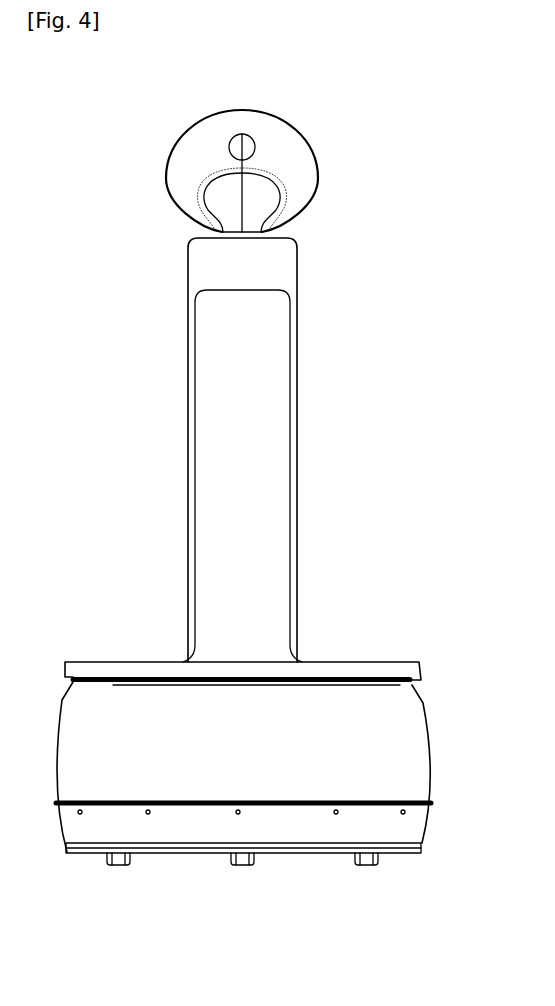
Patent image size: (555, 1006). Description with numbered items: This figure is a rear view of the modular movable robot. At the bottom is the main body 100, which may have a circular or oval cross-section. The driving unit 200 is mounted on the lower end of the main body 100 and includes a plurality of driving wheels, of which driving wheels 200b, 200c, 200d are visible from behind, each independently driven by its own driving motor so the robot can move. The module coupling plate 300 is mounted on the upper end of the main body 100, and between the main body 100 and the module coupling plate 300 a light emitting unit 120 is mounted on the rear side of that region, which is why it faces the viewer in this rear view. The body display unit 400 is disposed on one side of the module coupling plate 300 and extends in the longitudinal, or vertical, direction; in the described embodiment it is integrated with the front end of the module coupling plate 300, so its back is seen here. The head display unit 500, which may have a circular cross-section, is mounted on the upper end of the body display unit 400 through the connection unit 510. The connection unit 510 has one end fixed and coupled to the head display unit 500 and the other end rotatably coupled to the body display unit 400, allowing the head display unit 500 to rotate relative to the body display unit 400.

The main body 100 is at (277, 767).
The light emitting unit 120 is at (285, 693).
The driving unit 200 is at (244, 917).
The driving wheel 200b is at (367, 897).
The driving wheel 200c is at (117, 866).
The driving wheel 200d is at (241, 866).
The module coupling plate 300 is at (400, 672).
The body display unit 400 is at (275, 272).
The head display unit 500 is at (287, 122).
The connection unit 510 is at (285, 200).